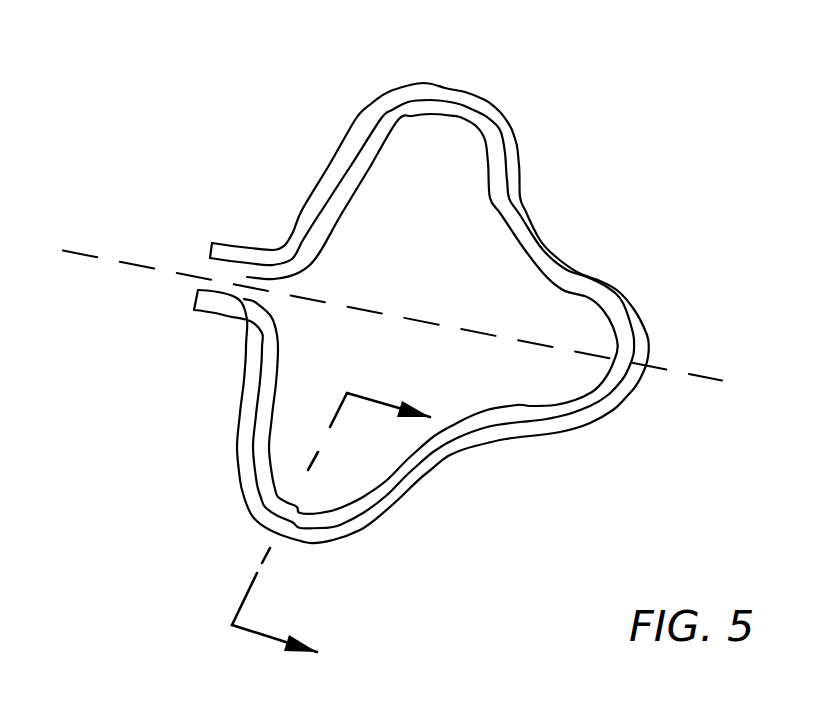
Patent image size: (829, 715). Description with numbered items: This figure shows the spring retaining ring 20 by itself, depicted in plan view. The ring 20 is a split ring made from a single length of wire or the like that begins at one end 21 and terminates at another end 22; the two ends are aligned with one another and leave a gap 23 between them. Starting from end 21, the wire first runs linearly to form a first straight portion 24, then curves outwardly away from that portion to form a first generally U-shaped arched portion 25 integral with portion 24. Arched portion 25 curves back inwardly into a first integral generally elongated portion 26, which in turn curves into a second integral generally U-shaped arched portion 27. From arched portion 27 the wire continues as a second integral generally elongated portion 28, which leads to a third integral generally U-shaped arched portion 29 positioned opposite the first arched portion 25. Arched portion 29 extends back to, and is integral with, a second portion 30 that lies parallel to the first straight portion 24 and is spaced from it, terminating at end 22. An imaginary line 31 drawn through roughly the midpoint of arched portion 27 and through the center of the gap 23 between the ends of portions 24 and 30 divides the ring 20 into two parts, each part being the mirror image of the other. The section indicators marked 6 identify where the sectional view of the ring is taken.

The retaining ring 20 is at (585, 137).
The end 21 is at (196, 290).
The end 22 is at (210, 253).
The gap 23 is at (205, 273).
The first straight portion 24 is at (223, 303).
The first generally U-shaped arched portion 25 is at (262, 507).
The first generally elongated portion 26 is at (450, 435).
The second generally U-shaped arched portion 27 is at (608, 373).
The second generally elongated portion 28 is at (532, 242).
The third generally U-shaped arched portion 29 is at (444, 96).
The second portion 30 is at (242, 256).
The imaginary line 31 is at (694, 375).
The section line 6- 6 is at (331, 517).